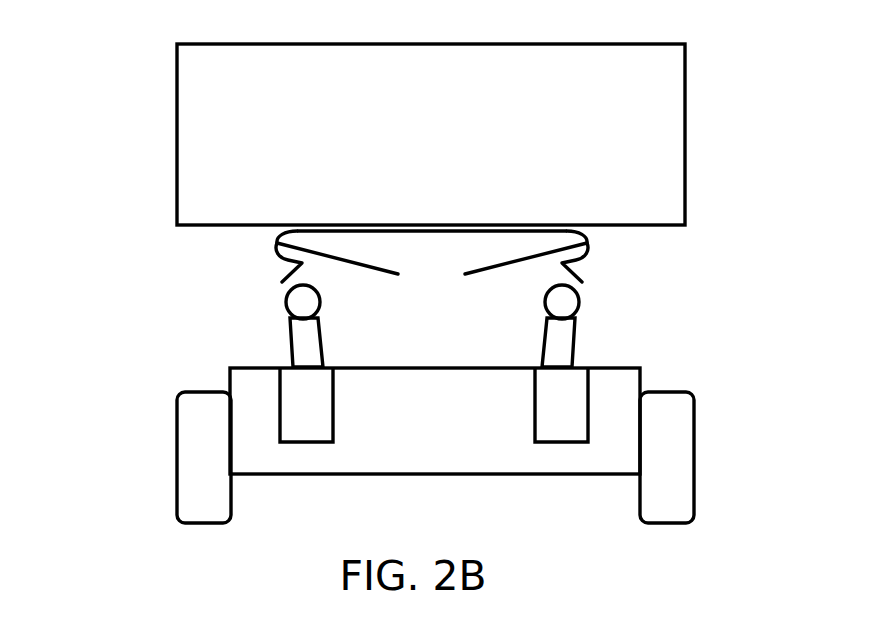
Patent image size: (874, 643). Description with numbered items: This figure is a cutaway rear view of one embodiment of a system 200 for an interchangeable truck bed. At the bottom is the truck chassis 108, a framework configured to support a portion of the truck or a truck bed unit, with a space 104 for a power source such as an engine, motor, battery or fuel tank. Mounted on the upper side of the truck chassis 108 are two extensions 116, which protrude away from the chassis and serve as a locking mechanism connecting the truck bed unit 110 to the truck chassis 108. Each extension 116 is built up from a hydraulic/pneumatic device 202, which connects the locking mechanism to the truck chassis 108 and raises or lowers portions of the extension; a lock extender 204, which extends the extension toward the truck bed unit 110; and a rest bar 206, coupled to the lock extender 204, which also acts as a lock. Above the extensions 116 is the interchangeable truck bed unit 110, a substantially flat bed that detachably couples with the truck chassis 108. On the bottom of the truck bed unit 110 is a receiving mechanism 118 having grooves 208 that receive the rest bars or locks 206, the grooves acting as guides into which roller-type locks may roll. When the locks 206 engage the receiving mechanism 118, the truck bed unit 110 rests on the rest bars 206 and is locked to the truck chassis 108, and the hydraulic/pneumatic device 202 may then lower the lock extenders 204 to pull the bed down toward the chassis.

The system for an interchangeable truck bed 200 is at (120, 45).
The truck bed unit 110 is at (685, 152).
The receiving mechanism 118 is at (359, 257).
The groove 208 is at (432, 257).
The extension 116 is at (549, 363).
The rest bar 206 is at (545, 299).
The lock extender 204 is at (548, 343).
The hydraulic/pneumatic device 202 is at (535, 403).
The truck chassis 108 is at (243, 372).
The space for a power source 104 is at (640, 493).